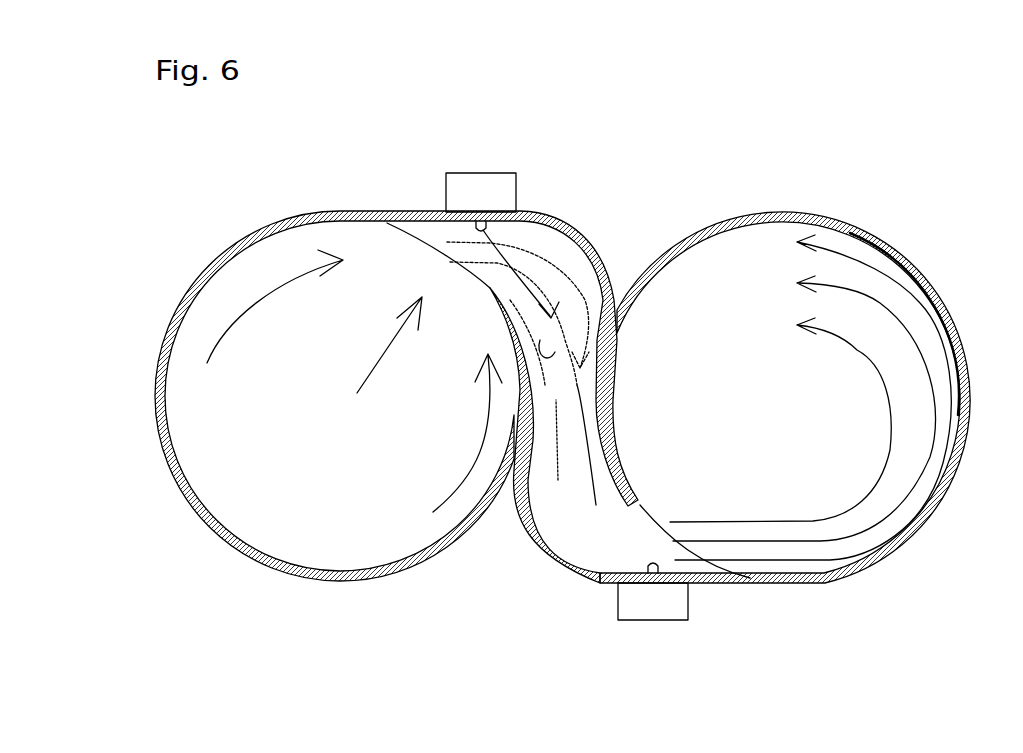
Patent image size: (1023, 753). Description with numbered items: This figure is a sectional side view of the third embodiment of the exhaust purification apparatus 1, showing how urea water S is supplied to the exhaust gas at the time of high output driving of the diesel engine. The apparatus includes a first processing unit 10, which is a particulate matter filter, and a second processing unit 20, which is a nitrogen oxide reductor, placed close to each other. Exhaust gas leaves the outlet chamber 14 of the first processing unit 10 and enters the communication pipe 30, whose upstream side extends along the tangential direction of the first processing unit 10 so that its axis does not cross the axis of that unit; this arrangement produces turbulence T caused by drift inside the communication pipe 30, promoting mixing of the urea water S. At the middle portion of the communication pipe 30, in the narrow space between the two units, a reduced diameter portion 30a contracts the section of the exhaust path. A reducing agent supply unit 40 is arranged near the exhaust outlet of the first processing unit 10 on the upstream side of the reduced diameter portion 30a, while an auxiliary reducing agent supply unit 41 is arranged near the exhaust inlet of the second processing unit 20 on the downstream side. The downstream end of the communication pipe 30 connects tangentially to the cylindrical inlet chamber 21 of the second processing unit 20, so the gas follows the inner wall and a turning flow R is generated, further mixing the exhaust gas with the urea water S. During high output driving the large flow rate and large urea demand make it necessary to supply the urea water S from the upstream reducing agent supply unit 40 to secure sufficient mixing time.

The exhaust purification apparatus 1 is at (987, 85).
The first processing unit 10 is at (203, 225).
The outlet chamber 14 is at (310, 230).
The second processing unit 20 is at (662, 231).
The inlet chamber 21 is at (778, 232).
The communication pipe 30 is at (512, 533).
The reduced diameter portion 30a is at (596, 505).
The reducing agent supply unit 40 is at (480, 172).
The auxiliary reducing agent supply unit 41 is at (653, 622).
The turning flow R is at (945, 403).
The urea water S is at (530, 243).
The turbulence T is at (558, 480).